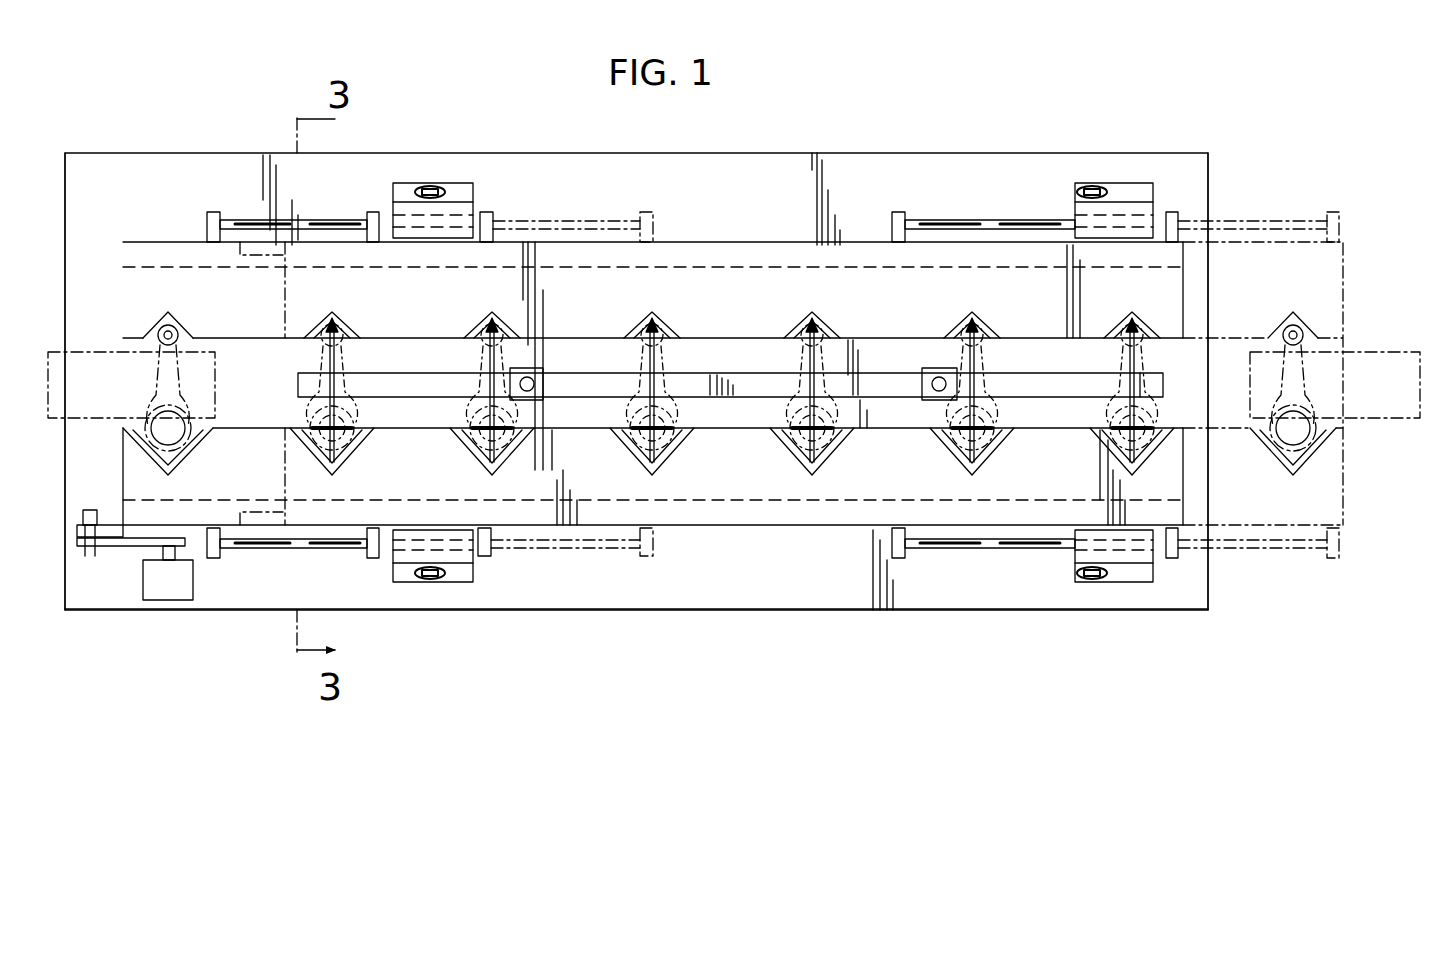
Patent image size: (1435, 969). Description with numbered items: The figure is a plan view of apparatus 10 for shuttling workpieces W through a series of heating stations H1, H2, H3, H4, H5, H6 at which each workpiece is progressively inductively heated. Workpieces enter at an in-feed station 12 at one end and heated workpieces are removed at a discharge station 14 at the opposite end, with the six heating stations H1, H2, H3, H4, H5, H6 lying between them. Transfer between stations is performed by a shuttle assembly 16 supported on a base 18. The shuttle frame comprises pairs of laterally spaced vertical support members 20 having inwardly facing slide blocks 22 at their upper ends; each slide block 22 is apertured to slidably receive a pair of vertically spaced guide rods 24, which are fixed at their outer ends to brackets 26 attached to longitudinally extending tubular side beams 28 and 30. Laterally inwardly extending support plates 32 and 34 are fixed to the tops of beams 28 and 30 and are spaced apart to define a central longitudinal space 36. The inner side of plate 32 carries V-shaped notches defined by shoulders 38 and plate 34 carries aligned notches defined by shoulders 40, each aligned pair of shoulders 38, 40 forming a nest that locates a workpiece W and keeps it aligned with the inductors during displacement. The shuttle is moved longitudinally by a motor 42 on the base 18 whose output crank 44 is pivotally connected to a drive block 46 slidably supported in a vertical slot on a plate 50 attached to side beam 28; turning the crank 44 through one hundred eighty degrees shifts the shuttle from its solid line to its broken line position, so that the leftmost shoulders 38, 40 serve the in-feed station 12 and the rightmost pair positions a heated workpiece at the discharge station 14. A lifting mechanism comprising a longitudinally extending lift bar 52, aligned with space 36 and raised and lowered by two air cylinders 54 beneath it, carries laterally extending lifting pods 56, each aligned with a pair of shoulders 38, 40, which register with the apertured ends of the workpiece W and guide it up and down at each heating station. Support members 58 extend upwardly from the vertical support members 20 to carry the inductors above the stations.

The apparatus 10 is at (1232, 106).
The in-feed station 12 is at (233, 362).
The discharge station 14 is at (1221, 366).
The shuttle assembly 16 is at (748, 190).
The base 18 is at (660, 598).
The vertical support members 20 is at (462, 185).
The slide blocks 22 is at (465, 208).
The guide rods 24 is at (312, 220).
The brackets 26 is at (212, 222).
The tubular side beam 28 is at (740, 512).
The tubular side beam 30 is at (720, 250).
The support plate 32 is at (775, 480).
The support plate 34 is at (672, 275).
The central longitudinally extending space 36 is at (397, 413).
The shoulders 38 is at (335, 462).
The shoulders 40 is at (345, 336).
The motor 42 is at (180, 592).
The output crank 44 is at (112, 546).
The drive block 46 is at (88, 510).
The plate 50 is at (105, 522).
The lift bar 52 is at (1038, 387).
The air cylinders 54 is at (545, 402).
The lifting pods 56 is at (318, 352).
The support members 58 is at (428, 186).
The workpiece W is at (150, 380).
The heating station H1 is at (364, 364).
The heating station H2 is at (522, 352).
The heating station H3 is at (672, 362).
The heating station H4 is at (795, 365).
The heating station H5 is at (950, 358).
The heating station H6 is at (1125, 358).